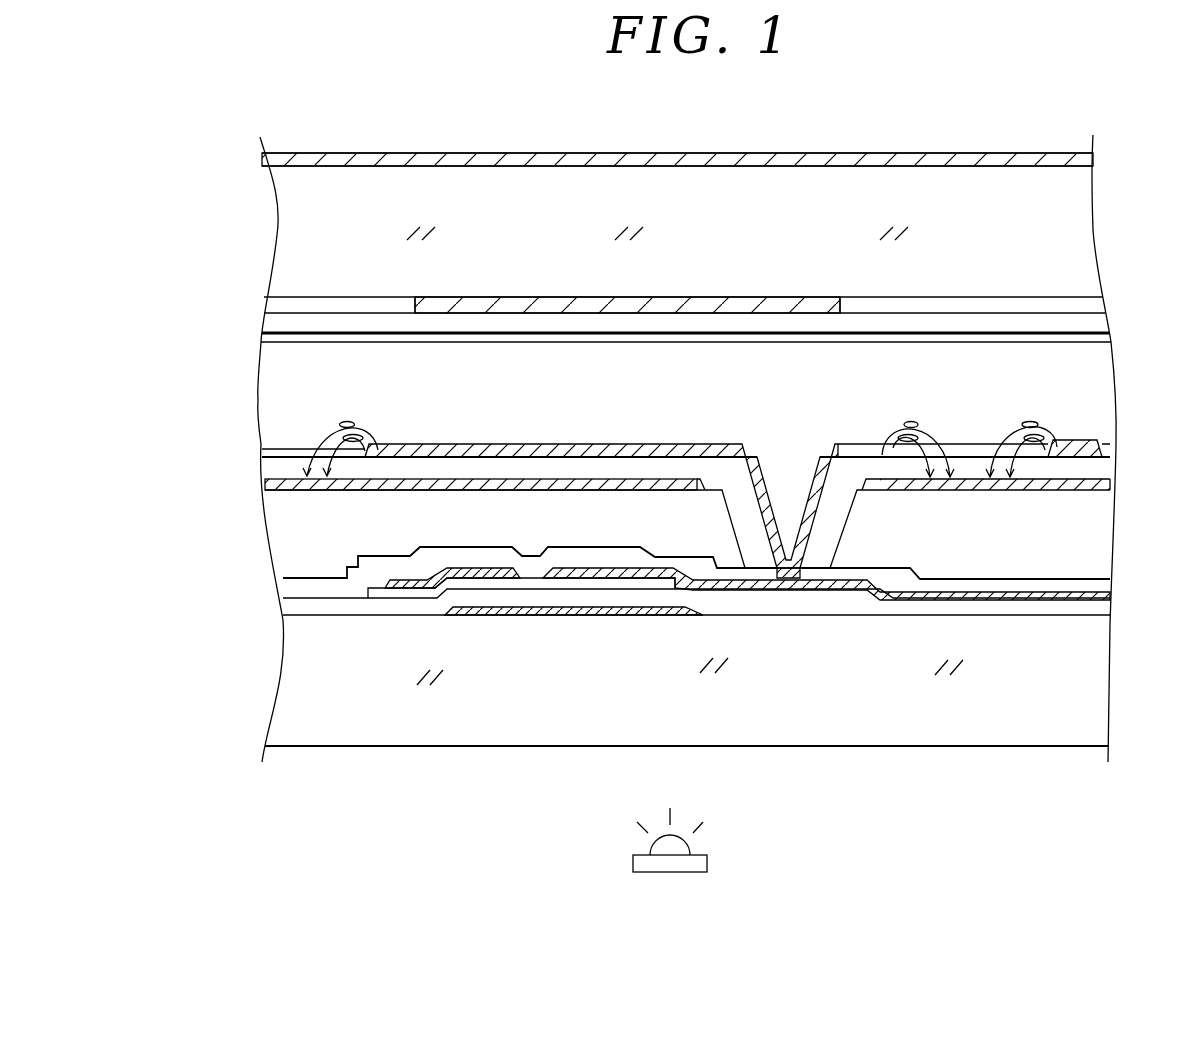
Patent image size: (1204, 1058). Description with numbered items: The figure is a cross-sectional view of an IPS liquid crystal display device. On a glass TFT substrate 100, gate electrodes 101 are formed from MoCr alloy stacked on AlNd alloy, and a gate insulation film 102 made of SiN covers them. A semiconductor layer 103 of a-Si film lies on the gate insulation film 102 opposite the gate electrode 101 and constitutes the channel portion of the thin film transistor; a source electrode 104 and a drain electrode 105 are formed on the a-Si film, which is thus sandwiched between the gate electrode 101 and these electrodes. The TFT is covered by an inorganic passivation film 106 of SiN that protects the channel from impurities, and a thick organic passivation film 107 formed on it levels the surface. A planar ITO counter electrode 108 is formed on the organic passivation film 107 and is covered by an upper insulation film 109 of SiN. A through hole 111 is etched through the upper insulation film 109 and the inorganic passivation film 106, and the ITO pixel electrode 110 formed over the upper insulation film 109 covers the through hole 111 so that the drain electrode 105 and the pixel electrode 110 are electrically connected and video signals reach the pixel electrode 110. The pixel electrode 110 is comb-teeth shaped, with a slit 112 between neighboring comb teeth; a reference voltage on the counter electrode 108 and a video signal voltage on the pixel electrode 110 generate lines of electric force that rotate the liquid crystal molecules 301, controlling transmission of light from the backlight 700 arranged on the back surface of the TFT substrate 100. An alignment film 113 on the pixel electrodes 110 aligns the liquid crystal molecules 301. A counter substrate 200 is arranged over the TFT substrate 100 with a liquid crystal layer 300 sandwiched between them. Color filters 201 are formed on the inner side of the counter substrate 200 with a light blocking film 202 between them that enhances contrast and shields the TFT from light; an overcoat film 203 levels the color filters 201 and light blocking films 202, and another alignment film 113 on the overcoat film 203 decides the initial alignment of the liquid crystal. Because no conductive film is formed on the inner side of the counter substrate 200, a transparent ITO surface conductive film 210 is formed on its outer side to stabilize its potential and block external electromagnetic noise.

The TFT substrate 100 is at (360, 720).
The gate electrode 101 is at (530, 612).
The gate insulation film 102 is at (287, 610).
The semiconductor layer 103 is at (615, 583).
The source electrode 104 is at (463, 573).
The drain electrode 105 is at (670, 575).
The inorganic passivation film 106 is at (285, 590).
The organic passivation film 107 is at (283, 528).
The counter electrode 108 is at (267, 485).
The upper insulation film 109 is at (275, 470).
The pixel electrode 110 is at (653, 443).
The through hole 111 is at (792, 453).
The slit 112 is at (965, 453).
The alignment film 113 is at (1103, 340).
The counter substrate 200 is at (1080, 225).
The color filter 201 is at (1095, 303).
The light blocking film 202 is at (780, 297).
The overcoat film 203 is at (1095, 322).
The surface conductive film 210 is at (995, 152).
The liquid crystal layer 300 is at (1098, 365).
The liquid crystal molecules 301 is at (1030, 422).
The backlight 700 is at (710, 862).